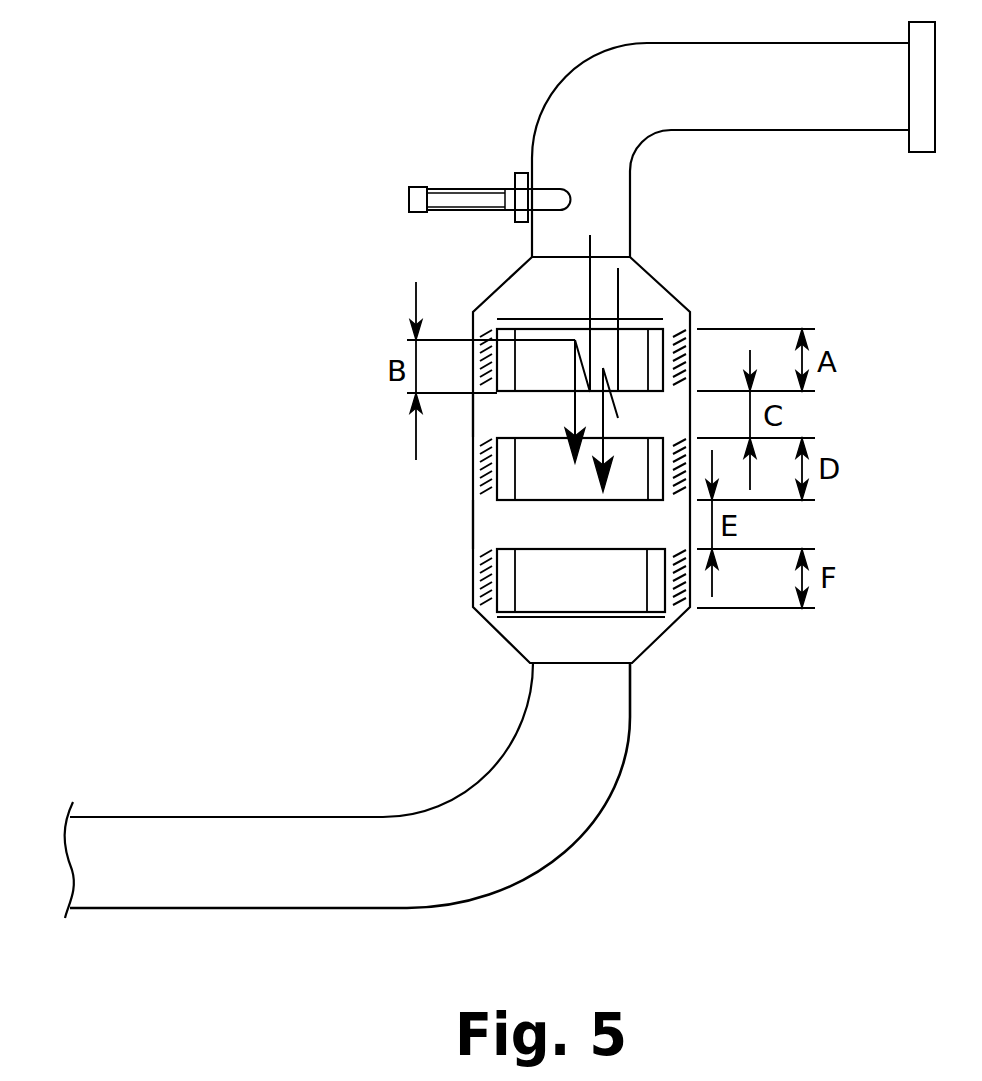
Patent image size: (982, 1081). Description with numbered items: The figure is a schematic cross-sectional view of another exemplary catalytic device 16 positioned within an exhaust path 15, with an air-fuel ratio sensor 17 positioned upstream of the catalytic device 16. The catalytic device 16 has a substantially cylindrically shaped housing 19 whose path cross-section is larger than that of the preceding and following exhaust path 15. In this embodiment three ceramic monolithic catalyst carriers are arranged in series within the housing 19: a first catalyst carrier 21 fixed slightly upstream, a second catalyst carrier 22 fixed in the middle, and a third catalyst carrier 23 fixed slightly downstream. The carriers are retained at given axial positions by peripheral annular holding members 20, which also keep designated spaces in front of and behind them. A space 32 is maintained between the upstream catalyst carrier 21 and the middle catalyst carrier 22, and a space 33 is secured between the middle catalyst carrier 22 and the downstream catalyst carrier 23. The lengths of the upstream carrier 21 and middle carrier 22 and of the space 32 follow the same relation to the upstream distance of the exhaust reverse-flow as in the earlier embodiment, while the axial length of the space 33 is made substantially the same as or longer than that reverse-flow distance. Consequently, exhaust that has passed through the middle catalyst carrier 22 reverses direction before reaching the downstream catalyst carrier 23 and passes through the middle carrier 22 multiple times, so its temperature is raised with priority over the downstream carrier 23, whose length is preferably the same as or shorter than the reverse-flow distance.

The exhaust path 15 is at (795, 115).
The catalytic device 16 is at (738, 310).
The air-fuel ratio sensor 17 is at (467, 185).
The housing 19 is at (470, 597).
The peripheral annular holding member 20 is at (490, 332).
The first catalyst carrier 21 is at (553, 335).
The second catalyst carrier 22 is at (483, 468).
The third catalyst carrier 23 is at (490, 567).
The space 32 is at (482, 428).
The space 33 is at (507, 523).